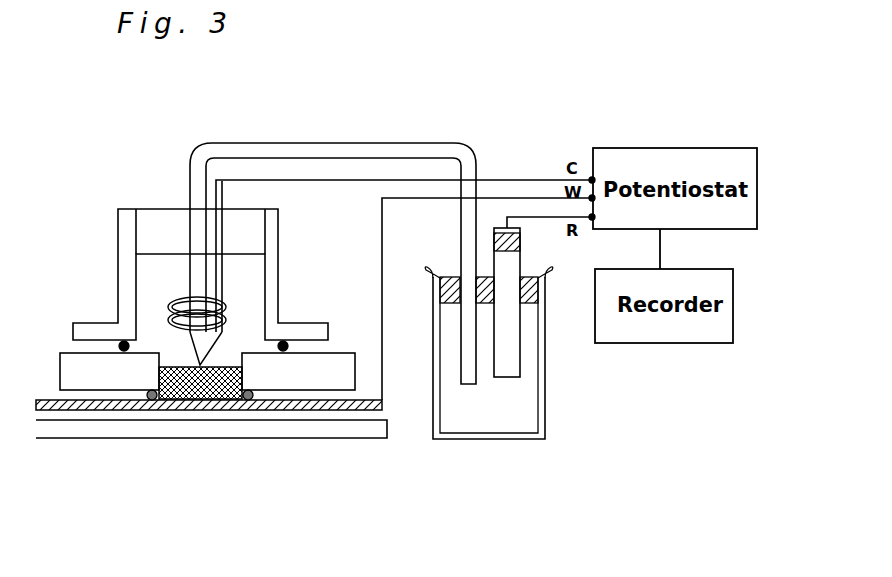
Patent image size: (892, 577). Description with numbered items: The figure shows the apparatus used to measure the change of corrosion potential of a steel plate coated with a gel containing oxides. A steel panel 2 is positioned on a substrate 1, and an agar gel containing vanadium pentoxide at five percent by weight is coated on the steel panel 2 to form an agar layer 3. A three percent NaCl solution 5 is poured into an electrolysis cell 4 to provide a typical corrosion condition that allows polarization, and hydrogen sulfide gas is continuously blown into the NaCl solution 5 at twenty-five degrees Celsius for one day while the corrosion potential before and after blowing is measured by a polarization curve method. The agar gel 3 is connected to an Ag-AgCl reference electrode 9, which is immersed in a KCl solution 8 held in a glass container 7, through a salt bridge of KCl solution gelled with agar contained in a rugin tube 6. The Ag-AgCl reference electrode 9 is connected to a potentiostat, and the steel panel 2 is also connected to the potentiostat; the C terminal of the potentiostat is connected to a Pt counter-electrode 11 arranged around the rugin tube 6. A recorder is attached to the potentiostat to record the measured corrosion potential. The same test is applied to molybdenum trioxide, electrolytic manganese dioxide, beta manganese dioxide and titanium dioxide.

The substrate 1 is at (72, 440).
The steel panel 2 is at (362, 404).
The agar layer 3 is at (198, 399).
The electrolysis cell 4 is at (118, 257).
The NaCl solution 5 is at (147, 290).
The rugin tube 6 is at (343, 143).
The glass container 7 is at (546, 363).
The KCl solution 8 is at (489, 420).
The Ag-AgCl reference electrode 9 is at (520, 377).
The Pt counter-electrode 11 is at (222, 197).